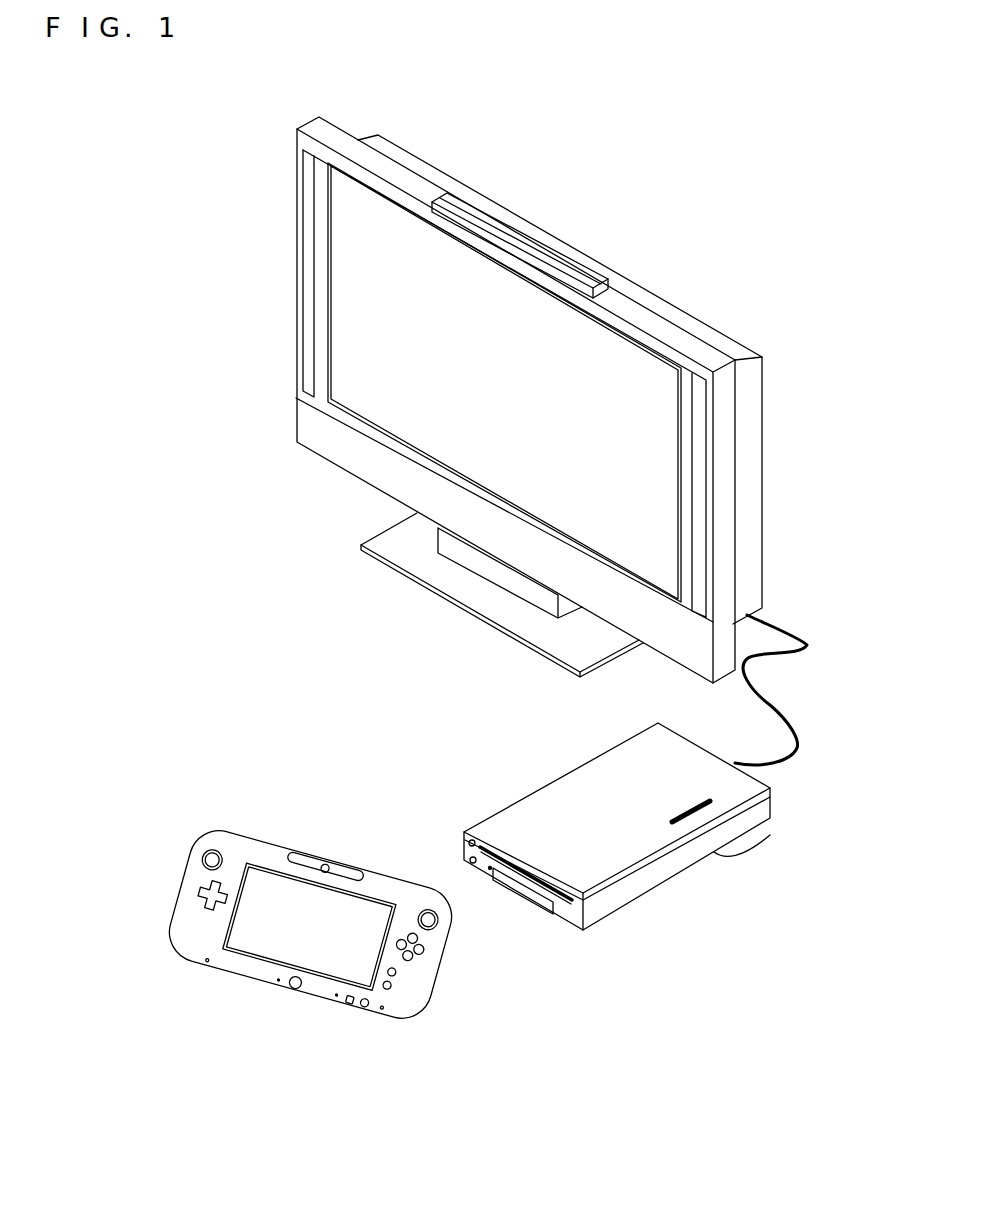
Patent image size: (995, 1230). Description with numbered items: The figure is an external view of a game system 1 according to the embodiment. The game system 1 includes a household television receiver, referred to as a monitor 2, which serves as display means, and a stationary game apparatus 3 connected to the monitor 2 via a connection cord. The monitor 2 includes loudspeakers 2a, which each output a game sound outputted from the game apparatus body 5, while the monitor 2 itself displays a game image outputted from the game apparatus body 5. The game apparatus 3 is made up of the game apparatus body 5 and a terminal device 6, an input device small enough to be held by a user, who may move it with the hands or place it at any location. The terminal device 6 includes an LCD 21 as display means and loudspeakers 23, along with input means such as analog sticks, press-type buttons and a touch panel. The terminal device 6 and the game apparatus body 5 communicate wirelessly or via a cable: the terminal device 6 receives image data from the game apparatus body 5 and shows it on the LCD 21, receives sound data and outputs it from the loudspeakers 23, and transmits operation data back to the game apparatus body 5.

The game system 1 is at (140, 150).
The monitor 2 is at (692, 290).
The loudspeakers 2a is at (312, 215).
The game apparatus 3 is at (683, 985).
The game apparatus body 5 is at (717, 857).
The terminal device 6 is at (237, 812).
The LCD 21 is at (323, 965).
The loudspeakers 23 is at (207, 962).